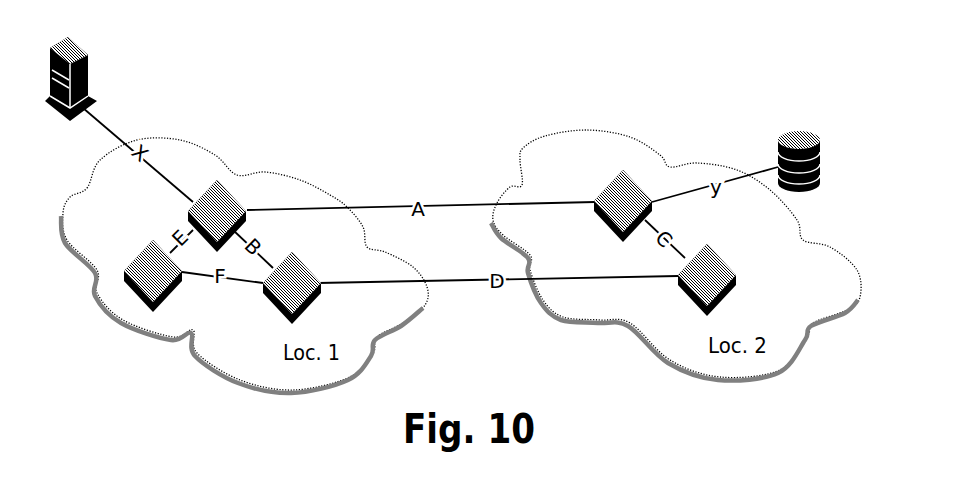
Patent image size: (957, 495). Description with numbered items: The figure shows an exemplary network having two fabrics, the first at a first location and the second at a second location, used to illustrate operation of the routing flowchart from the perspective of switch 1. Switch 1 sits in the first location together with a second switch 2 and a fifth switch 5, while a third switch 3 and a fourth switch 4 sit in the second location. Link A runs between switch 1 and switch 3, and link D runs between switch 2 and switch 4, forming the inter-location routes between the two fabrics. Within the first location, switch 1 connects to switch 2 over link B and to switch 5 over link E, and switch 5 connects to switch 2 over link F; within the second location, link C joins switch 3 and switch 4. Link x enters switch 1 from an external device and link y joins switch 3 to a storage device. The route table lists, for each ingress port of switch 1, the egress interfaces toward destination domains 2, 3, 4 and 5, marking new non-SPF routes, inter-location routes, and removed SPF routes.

The switch 1 is at (478, 247).
The destination domain 2 is at (478, 247).
The destination domain 3 is at (478, 247).
The destination domain 4 is at (478, 247).
The destination domain 5 is at (478, 247).